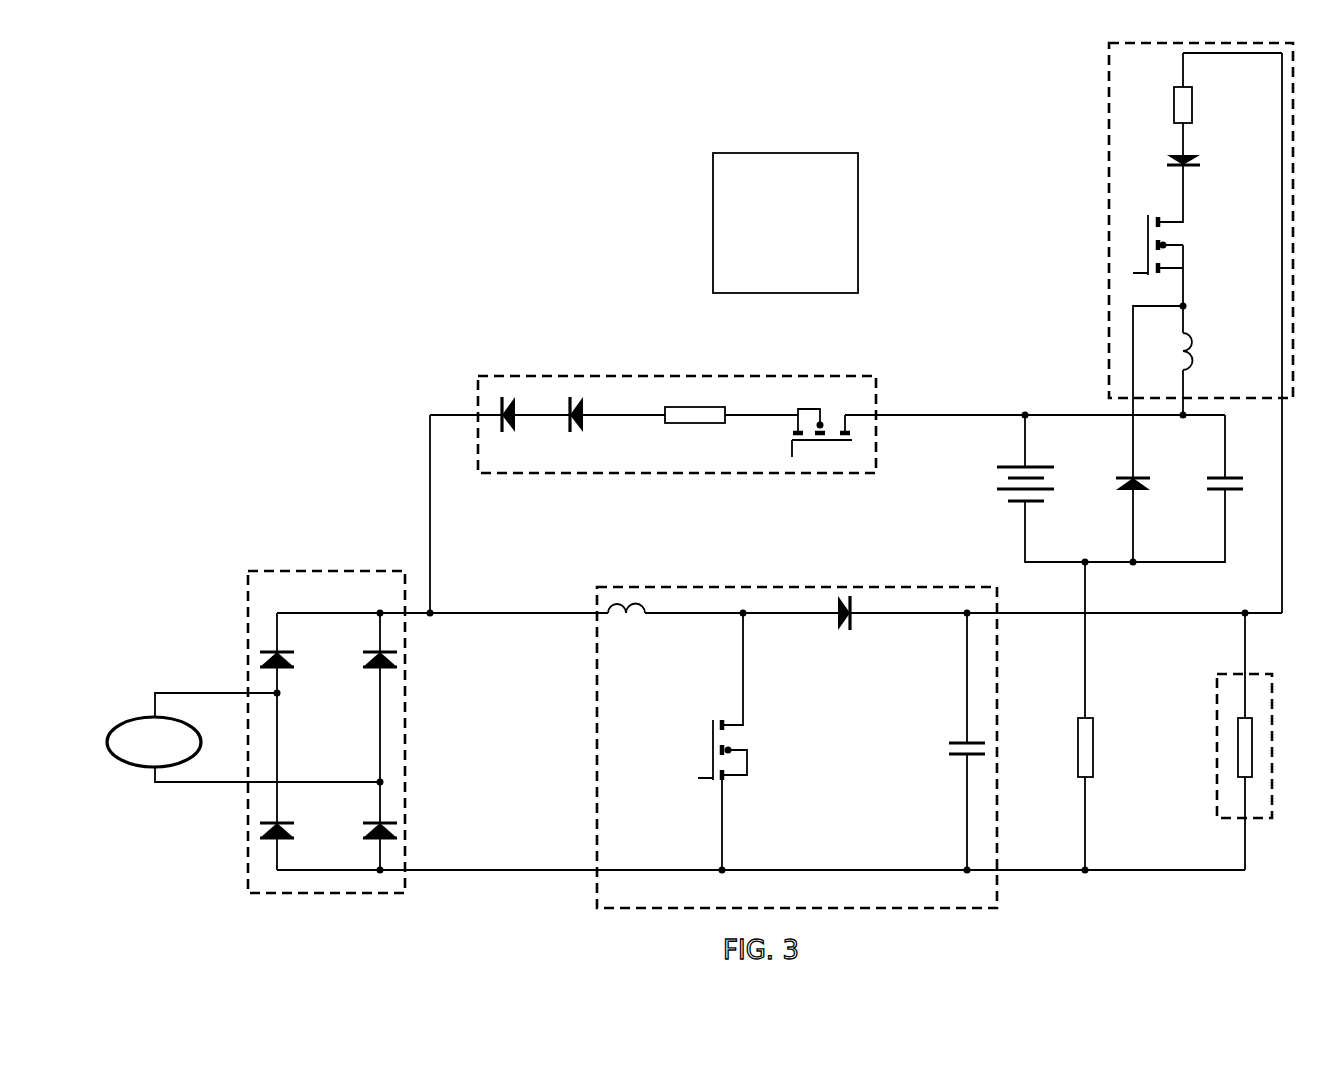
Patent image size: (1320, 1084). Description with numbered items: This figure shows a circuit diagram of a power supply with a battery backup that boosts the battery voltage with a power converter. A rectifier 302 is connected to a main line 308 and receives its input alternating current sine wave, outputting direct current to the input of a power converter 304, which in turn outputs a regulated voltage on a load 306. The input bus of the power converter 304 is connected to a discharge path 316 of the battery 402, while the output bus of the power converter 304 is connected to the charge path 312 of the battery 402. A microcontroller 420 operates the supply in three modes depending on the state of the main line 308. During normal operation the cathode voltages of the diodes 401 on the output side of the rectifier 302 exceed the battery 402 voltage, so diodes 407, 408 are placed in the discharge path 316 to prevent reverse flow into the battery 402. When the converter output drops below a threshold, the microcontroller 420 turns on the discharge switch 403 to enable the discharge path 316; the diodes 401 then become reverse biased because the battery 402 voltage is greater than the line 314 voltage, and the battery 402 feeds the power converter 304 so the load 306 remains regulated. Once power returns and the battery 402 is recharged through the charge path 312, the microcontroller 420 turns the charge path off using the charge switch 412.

The rectifier 302 is at (281, 694).
The power converter 304 is at (800, 587).
The load 306 is at (1217, 747).
The main line 308 is at (123, 717).
The charge path 312 is at (1158, 229).
The line 314 is at (493, 611).
The discharge path 316 is at (827, 384).
The diodes 401 is at (378, 823).
The battery 402 is at (1000, 489).
The discharge switch 403 is at (822, 425).
The diode 407 is at (582, 397).
The diode 408 is at (513, 397).
The charge switch 412 is at (1165, 243).
The microcontroller 420 is at (785, 223).